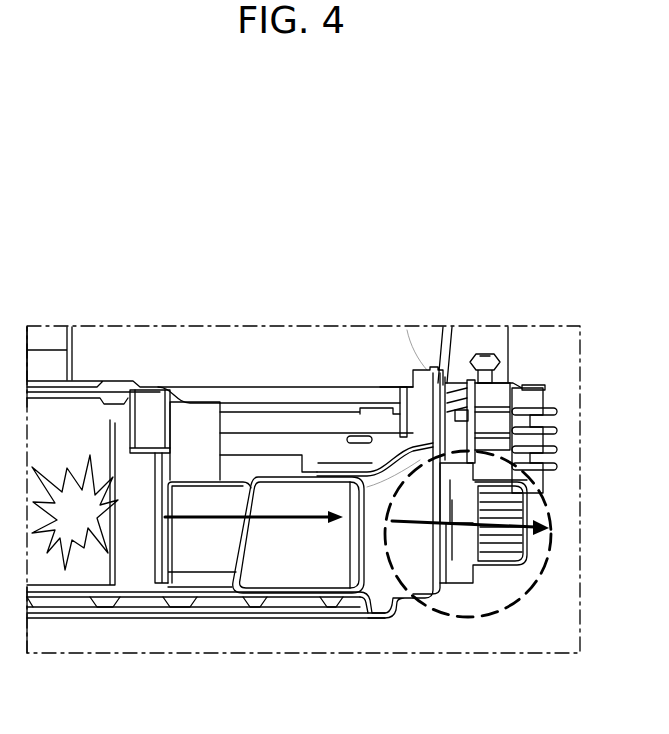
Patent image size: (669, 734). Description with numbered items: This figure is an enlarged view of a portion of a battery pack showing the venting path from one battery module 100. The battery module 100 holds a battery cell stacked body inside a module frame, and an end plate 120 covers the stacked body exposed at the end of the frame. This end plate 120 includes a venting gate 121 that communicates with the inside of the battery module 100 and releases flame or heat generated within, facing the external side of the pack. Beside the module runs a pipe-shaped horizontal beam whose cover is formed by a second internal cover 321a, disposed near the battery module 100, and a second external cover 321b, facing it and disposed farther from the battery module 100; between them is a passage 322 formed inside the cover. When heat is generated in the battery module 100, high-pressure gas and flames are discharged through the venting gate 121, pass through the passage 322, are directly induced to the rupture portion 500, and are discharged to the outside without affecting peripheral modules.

The battery module 100 is at (55, 577).
The end plate 120 is at (137, 577).
The venting gate 121 is at (205, 553).
The second internal cover 321a is at (268, 590).
The passage 322 is at (337, 572).
The second external cover 321b is at (382, 600).
The rupture portion 500 is at (552, 508).